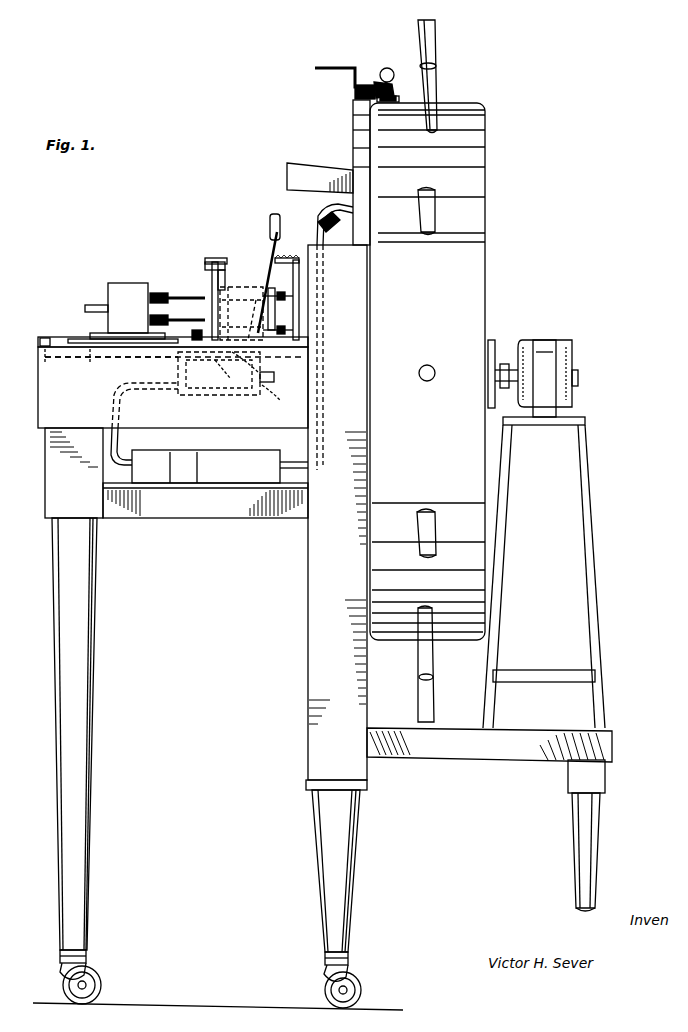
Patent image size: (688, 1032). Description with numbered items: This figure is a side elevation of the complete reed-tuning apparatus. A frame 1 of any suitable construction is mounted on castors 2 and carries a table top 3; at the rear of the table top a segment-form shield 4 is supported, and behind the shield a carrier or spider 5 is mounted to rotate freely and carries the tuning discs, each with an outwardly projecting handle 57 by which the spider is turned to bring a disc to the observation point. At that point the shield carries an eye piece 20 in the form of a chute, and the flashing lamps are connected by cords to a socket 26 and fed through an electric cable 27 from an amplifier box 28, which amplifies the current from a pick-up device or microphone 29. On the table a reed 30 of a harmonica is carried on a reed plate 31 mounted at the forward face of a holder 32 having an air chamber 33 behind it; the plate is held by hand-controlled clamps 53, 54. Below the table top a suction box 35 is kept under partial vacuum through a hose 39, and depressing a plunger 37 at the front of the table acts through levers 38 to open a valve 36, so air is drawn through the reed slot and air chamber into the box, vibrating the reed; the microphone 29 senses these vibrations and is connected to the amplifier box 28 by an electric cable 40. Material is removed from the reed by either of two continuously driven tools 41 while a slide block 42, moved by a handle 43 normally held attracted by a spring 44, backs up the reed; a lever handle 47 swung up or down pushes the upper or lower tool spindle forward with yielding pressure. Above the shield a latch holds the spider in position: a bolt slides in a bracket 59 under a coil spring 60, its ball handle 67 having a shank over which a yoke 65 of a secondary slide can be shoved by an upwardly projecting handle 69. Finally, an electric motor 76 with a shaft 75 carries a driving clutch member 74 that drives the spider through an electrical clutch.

The frame 1 is at (308, 626).
The castors 2 is at (92, 975).
The table top 3 is at (50, 338).
The segment-form shield 4 is at (355, 135).
The carrier or spider 5 is at (490, 236).
The eye piece 20 is at (305, 178).
The socket 26 is at (328, 204).
The electric cable 27 is at (300, 470).
The amplifier box 28 is at (238, 490).
The pick-up device or microphone 29 is at (240, 386).
The reed 30 is at (212, 296).
The reed plate 31 is at (229, 288).
The holder 32 is at (241, 313).
The air chamber 33 is at (256, 362).
The suction box or vacuum box 35 is at (214, 395).
The valve 36 is at (277, 377).
The plunger 37 is at (42, 338).
The levers 38 is at (148, 358).
The hose 39 is at (280, 401).
The electric cable 40 is at (120, 410).
The tools 41 is at (200, 298).
The slide block 42 is at (260, 292).
The handle 43 is at (270, 236).
The spring 44 is at (283, 260).
The handle 47 is at (108, 300).
The hand-controlled clamp 53 is at (210, 260).
The hand-controlled clamp 54 is at (190, 329).
The handle 57 is at (438, 36).
The bracket 59 is at (356, 93).
The coil spring 60 is at (400, 98).
The yoke 65 is at (380, 85).
The ball handle 67 is at (389, 68).
The handle 69 is at (316, 68).
The driving clutch member 74 is at (495, 345).
The shaft 75 is at (508, 368).
The electric motor 76 is at (552, 350).